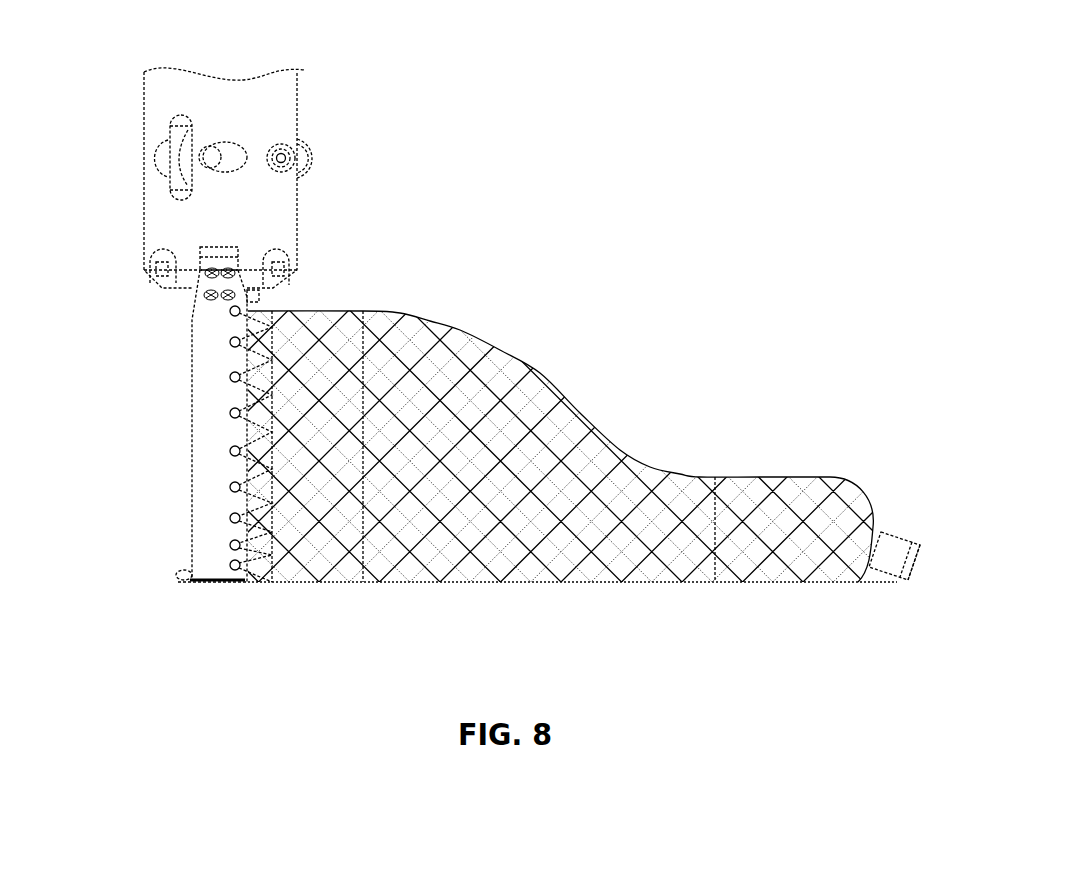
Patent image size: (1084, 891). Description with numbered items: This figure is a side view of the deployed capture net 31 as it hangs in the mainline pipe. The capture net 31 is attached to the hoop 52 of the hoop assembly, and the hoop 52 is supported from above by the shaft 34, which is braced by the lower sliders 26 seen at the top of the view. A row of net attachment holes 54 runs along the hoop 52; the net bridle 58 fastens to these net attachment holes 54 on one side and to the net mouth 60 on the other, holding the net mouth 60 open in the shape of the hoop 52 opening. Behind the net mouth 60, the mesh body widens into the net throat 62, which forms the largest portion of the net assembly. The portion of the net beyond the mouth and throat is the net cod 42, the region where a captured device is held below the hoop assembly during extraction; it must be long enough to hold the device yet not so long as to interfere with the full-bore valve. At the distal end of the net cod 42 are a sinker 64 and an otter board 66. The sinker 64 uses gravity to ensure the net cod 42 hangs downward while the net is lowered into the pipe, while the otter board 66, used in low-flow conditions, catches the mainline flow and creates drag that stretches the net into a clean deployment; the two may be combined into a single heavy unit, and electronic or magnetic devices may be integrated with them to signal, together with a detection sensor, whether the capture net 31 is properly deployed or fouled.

The lower slider 26 is at (163, 144).
The shaft 34 is at (302, 95).
The capture net 31 is at (488, 259).
The hoop 52 is at (190, 365).
The net attachment holes 54 is at (231, 414).
The net bridle 58 is at (257, 568).
The net mouth 60 is at (326, 583).
The net throat 62 is at (542, 584).
The net cod 42 is at (789, 584).
The sinker 64 is at (869, 559).
The otter board 66 is at (913, 562).